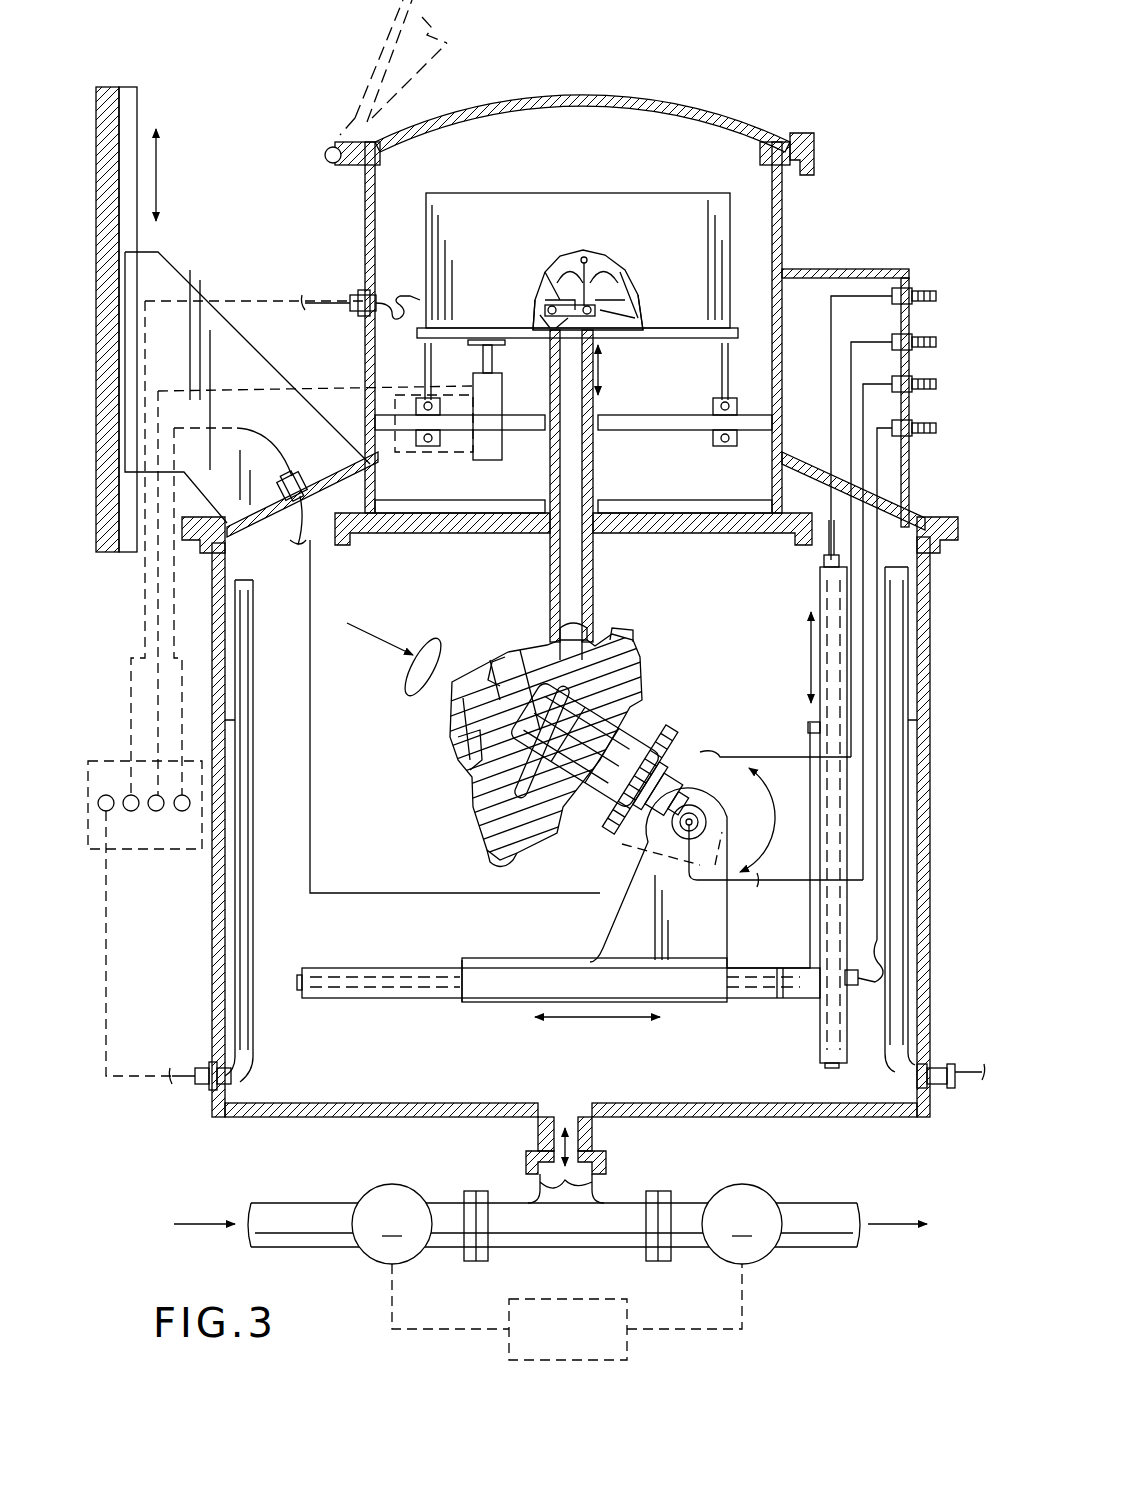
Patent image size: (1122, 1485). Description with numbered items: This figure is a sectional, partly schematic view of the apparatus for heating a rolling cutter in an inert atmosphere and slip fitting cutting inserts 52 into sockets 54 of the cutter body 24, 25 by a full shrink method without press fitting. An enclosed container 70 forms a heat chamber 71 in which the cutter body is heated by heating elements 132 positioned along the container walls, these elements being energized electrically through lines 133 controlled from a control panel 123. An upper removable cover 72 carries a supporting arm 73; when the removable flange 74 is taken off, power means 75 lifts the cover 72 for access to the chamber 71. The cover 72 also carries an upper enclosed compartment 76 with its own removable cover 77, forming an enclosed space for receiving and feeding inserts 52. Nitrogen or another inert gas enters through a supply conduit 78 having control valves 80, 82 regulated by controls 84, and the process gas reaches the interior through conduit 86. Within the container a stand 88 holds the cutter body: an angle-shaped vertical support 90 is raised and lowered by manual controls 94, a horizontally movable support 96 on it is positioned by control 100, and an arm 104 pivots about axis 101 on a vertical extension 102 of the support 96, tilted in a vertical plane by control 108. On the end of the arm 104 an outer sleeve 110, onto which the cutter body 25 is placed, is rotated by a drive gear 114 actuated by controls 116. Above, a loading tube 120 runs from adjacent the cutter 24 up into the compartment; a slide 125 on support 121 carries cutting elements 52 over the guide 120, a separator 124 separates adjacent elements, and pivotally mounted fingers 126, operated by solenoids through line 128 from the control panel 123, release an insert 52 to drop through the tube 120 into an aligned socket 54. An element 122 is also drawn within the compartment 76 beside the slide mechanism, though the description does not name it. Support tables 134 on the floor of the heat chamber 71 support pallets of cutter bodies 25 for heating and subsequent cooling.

The cutter body 24 is at (450, 714).
The cutter body 25 is at (472, 770).
The cutting inserts 52 is at (556, 268).
The sockets 54 is at (482, 668).
The enclosed container 70 is at (935, 745).
The heat chamber 71 is at (730, 627).
The upper removable cover 72 is at (882, 502).
The supporting arm 73 is at (160, 252).
The removable flange 74 is at (948, 555).
The power means 75 is at (128, 97).
The upper enclosed compartment 76 is at (790, 205).
The removable cover 77 is at (380, 52).
The supply conduit 78 is at (303, 1220).
The control valve 80 is at (408, 1200).
The control valve 82 is at (762, 1200).
The controls 84 is at (555, 1343).
The conduit 86 is at (597, 1132).
The stand 88 is at (730, 921).
The vertical support 90 is at (815, 728).
The manual controls 94 is at (928, 428).
The horizontally movable support 96 is at (690, 963).
The control 100 is at (925, 382).
The pivot axis 101 is at (680, 835).
The vertical extension 102 is at (672, 897).
The arm 104 is at (695, 748).
The control 108 is at (925, 340).
The outer sleeve 110 is at (603, 796).
The drive gear 114 is at (645, 740).
The controls 116 is at (917, 288).
The loading tube 120 is at (570, 572).
The support 121 is at (668, 342).
The actuator 122 is at (483, 450).
The control panel 123 is at (139, 853).
The separator 124 is at (580, 258).
The slide 125 is at (620, 370).
The pivotally mounted fingers 126 is at (555, 325).
The line 128 is at (352, 290).
The heating elements 132 is at (250, 925).
The lines 133 is at (198, 1090).
The support tables 134 is at (938, 1090).